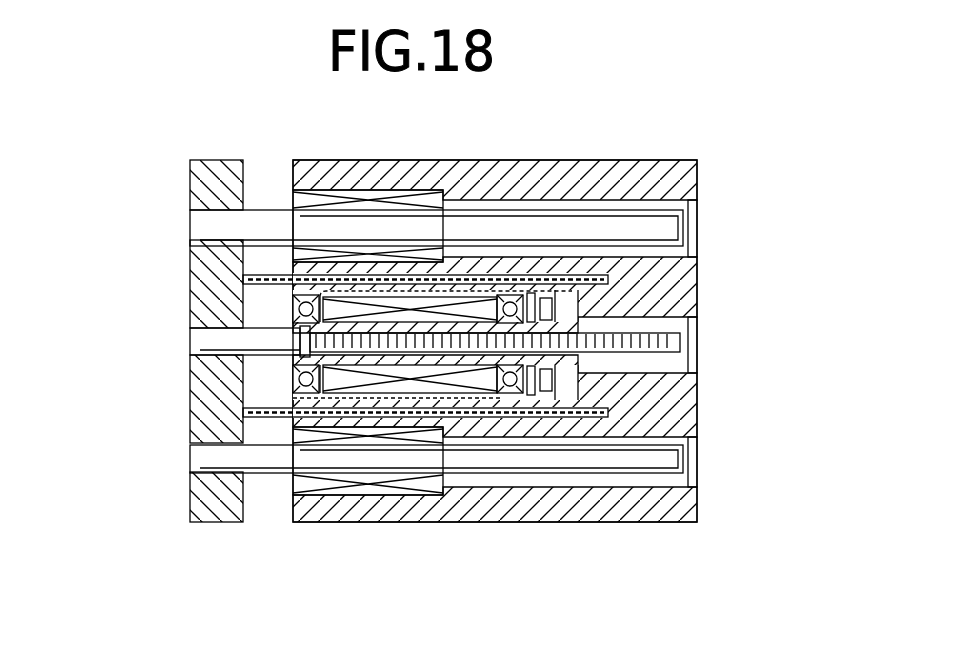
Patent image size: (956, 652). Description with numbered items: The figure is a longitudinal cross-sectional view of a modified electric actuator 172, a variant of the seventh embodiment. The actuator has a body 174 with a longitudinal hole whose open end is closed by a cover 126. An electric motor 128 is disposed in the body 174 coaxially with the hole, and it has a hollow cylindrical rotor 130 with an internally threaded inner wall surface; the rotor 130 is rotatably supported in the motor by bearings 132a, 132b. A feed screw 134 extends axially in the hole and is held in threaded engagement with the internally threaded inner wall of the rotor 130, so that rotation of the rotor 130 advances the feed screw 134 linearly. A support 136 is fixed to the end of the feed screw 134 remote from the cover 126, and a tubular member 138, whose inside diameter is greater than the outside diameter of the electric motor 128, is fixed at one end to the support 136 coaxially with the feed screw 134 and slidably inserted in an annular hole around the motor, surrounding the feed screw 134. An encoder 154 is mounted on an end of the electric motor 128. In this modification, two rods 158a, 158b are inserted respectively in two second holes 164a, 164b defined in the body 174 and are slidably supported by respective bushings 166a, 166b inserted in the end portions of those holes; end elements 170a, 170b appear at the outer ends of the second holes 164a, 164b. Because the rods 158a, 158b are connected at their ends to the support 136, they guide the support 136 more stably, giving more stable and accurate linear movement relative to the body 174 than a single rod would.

The cover 126 is at (699, 345).
The electric motor 128 is at (405, 383).
The rotor 130 is at (458, 418).
The bearing 132a is at (508, 388).
The bearing 132b is at (306, 392).
The feed screw 134 is at (190, 345).
The support 136 is at (192, 398).
The tubular member 138 is at (268, 418).
The encoder 154 is at (546, 298).
The rod 158a is at (190, 468).
The rod 158b is at (192, 228).
The second hole 164a is at (613, 490).
The second hole 164b is at (621, 212).
The bushing 166a is at (304, 490).
The bushing 166b is at (333, 196).
The end cap 170a is at (699, 463).
The end cap 170b is at (699, 226).
The modified electric actuator 172 is at (670, 110).
The body 174 is at (666, 518).